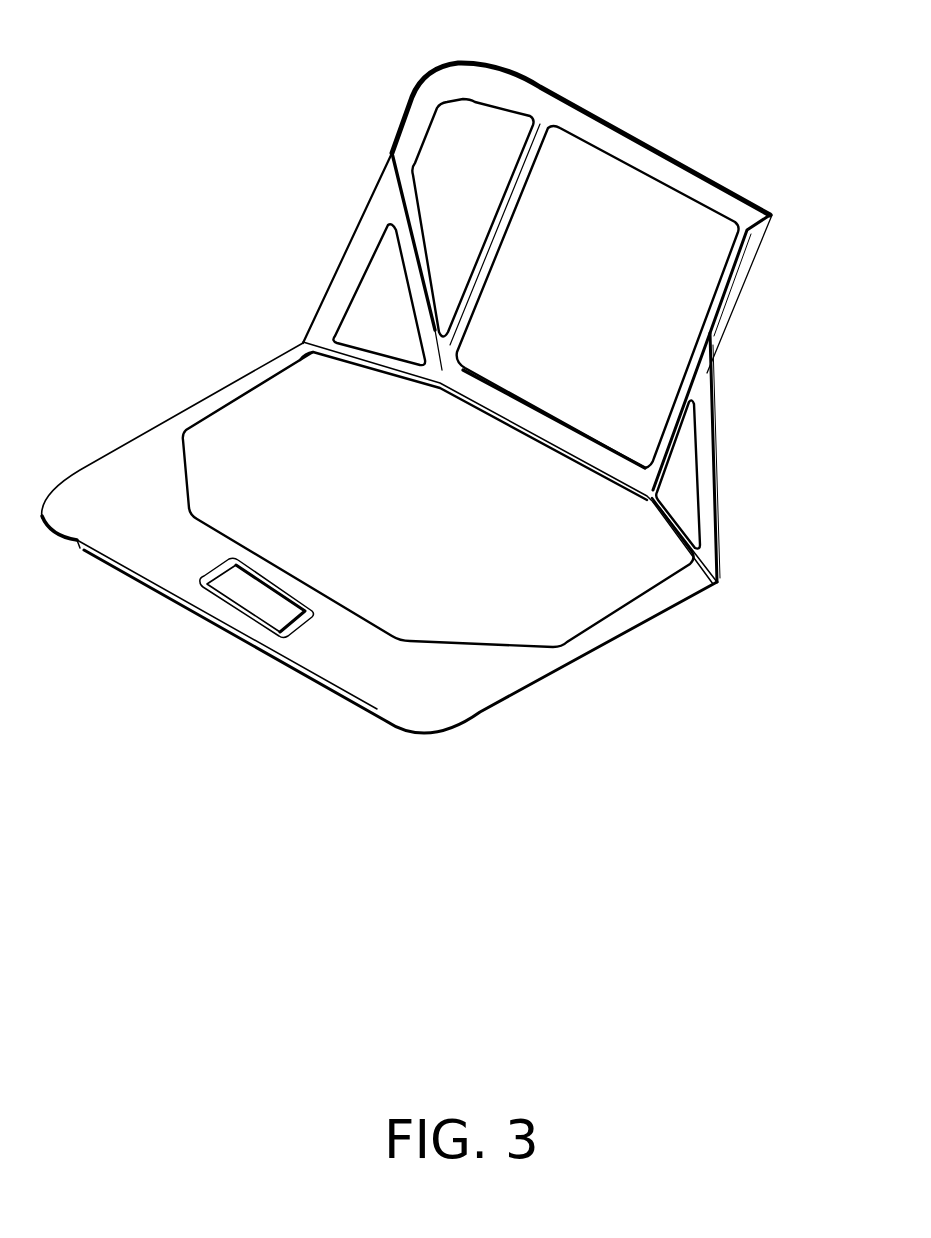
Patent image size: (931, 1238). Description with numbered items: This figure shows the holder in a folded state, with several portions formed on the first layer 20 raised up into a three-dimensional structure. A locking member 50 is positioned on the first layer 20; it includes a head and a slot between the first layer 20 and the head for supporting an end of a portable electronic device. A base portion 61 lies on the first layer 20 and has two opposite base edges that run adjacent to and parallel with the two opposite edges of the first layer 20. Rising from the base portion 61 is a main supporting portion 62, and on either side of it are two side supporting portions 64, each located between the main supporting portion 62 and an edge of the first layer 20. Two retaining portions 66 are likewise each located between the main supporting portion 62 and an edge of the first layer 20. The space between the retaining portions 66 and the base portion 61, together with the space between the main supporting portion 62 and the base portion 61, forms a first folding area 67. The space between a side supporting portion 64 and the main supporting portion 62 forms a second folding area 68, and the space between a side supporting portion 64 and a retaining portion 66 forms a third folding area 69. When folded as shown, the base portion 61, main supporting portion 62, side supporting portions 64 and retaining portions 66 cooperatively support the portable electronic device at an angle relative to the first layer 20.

The first layer 20 is at (443, 682).
The locking member 50 is at (266, 604).
The base portion 61 is at (530, 595).
The main supporting portion 62 is at (618, 238).
The side supporting portion 64 is at (467, 170).
The retaining portion 66 is at (372, 288).
The first folding area 67 is at (663, 603).
The second folding area 68 is at (537, 147).
The third folding area 69 is at (397, 208).